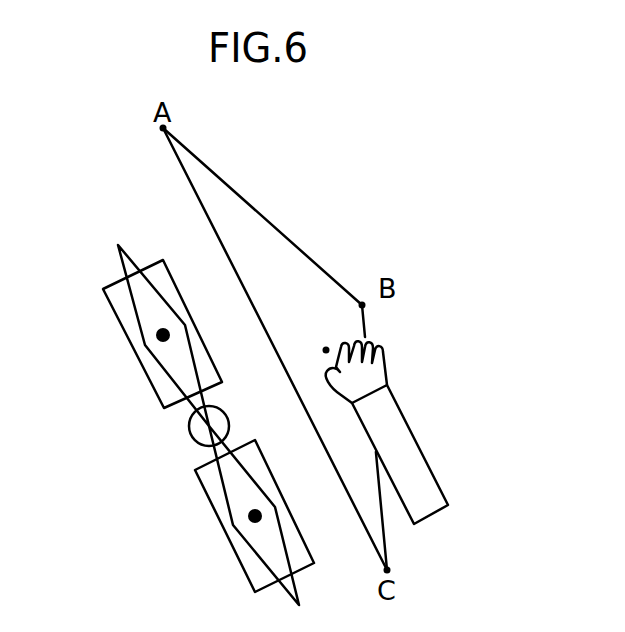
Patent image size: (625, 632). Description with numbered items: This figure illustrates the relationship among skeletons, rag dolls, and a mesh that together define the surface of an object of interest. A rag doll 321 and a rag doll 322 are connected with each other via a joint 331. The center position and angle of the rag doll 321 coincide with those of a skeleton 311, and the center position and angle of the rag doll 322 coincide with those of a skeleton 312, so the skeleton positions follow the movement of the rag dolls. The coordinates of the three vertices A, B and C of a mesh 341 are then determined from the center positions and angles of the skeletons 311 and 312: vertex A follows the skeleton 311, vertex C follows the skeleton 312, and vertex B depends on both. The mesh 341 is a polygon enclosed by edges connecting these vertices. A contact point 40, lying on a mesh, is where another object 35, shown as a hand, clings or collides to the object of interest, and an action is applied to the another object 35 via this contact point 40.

The skeleton 311 is at (131, 261).
The skeleton 312 is at (285, 597).
The rag doll 321 is at (143, 368).
The rag doll 322 is at (221, 522).
The joint 331 is at (190, 428).
The mesh 341 is at (258, 211).
The contact point 40 is at (326, 350).
The another object 35 is at (444, 399).